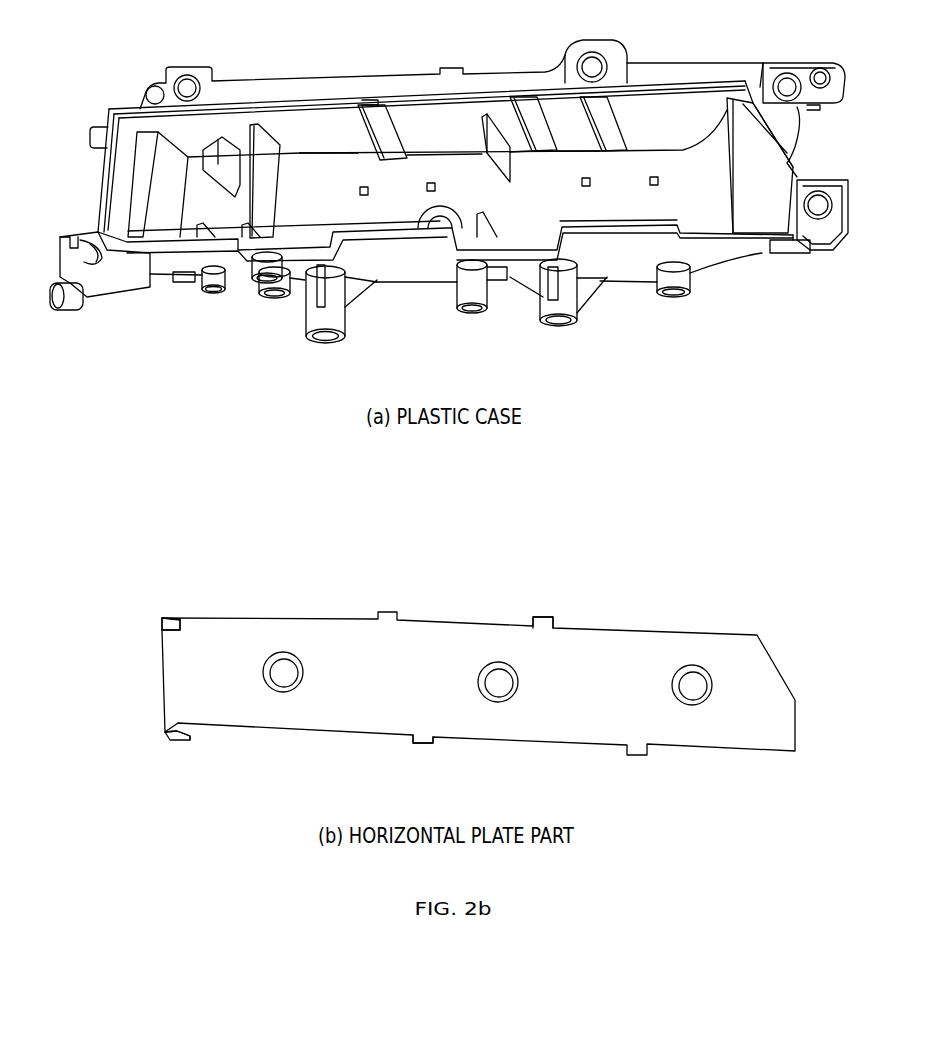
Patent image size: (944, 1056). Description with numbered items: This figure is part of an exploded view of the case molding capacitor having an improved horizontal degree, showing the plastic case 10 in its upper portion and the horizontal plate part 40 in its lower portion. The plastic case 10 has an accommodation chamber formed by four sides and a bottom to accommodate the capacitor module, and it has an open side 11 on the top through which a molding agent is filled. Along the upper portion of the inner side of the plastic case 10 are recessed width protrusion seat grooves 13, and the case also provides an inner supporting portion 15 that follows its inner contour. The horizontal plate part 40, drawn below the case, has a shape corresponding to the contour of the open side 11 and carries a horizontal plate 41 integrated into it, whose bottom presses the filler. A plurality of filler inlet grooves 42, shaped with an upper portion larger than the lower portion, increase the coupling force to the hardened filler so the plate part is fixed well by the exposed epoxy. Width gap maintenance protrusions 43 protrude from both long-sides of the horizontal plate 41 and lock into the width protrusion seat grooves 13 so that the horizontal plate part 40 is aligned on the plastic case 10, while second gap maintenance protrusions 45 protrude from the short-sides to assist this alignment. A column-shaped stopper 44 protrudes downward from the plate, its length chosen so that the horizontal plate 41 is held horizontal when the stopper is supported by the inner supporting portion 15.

The plastic case 10 is at (412, 258).
The open side 11 is at (633, 192).
The width protrusion seat groove 13 is at (370, 103).
The inner supporting portion 15 is at (147, 152).
The horizontal plate part 40 is at (478, 660).
The horizontal plate 41 is at (358, 668).
The filler inlet groove 42 is at (285, 668).
The width gap maintenance protrusion 43 is at (541, 617).
The column-shaped stopper 44 is at (178, 740).
The second gap maintenance protrusion 45 is at (170, 620).